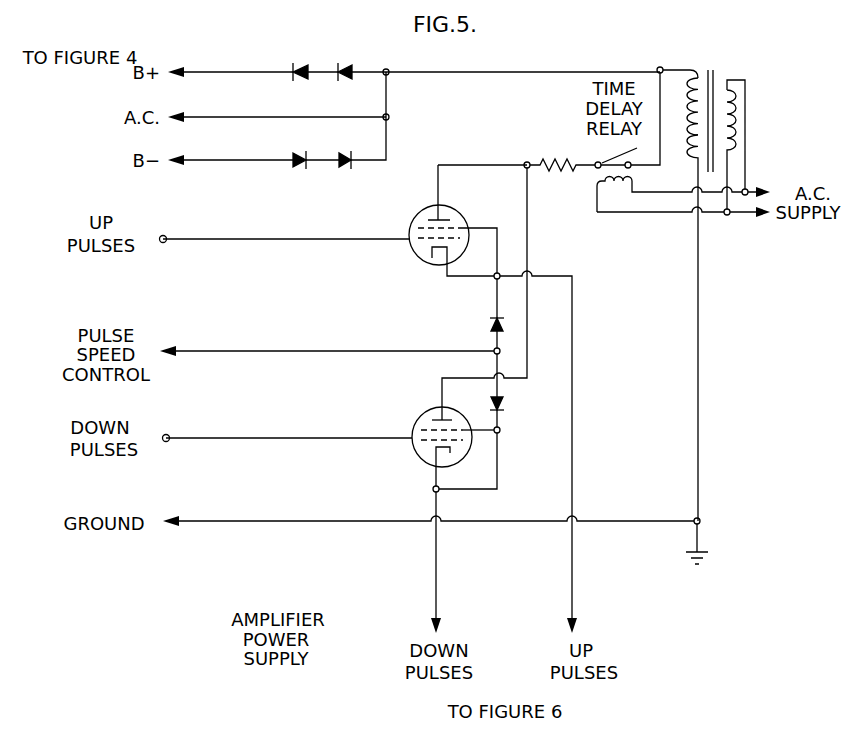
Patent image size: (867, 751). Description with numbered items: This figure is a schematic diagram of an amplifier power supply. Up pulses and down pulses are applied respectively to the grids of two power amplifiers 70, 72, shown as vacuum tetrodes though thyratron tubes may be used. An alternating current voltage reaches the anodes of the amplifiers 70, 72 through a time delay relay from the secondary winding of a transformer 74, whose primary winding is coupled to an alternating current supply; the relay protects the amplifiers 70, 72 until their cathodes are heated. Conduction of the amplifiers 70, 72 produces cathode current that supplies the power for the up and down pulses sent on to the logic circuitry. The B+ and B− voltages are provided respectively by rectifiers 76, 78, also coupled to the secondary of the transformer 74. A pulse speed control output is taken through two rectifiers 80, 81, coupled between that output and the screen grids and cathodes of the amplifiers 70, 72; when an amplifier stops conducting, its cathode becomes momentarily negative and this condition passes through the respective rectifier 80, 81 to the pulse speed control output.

The power amplifier 70 is at (460, 213).
The power amplifier 72 is at (421, 415).
The transformer 74 is at (702, 61).
The rectifier 76 is at (296, 63).
The rectifier 78 is at (296, 151).
The rectifier 80 is at (495, 324).
The rectifier 81 is at (505, 402).